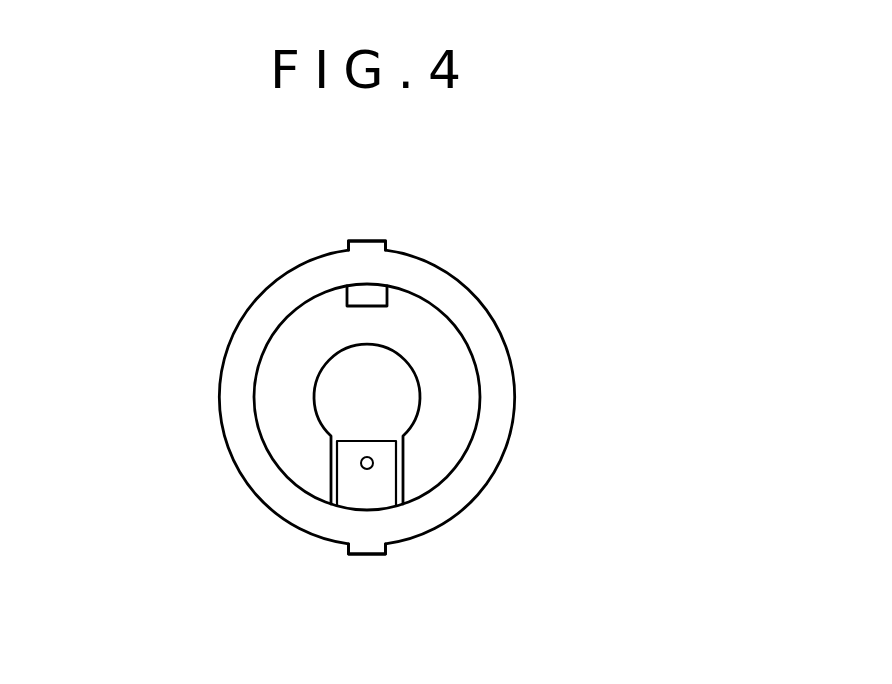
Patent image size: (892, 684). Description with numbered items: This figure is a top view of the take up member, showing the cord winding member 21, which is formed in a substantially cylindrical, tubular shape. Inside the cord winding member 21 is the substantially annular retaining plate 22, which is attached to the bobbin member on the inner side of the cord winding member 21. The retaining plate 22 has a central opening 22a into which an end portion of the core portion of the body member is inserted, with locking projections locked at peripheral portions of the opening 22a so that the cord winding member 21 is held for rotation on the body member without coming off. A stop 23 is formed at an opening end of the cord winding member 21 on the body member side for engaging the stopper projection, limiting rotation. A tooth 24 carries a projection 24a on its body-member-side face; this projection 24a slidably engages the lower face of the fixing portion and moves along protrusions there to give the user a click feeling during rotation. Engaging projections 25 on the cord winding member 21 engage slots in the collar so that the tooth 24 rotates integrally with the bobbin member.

The cord winding member 21 is at (439, 238).
The retaining plate 22 is at (438, 333).
The central opening 22a is at (318, 403).
The stop 23 is at (360, 295).
The tooth 24 is at (345, 486).
The projection 24a is at (375, 463).
The engaging projection 25 is at (369, 247).